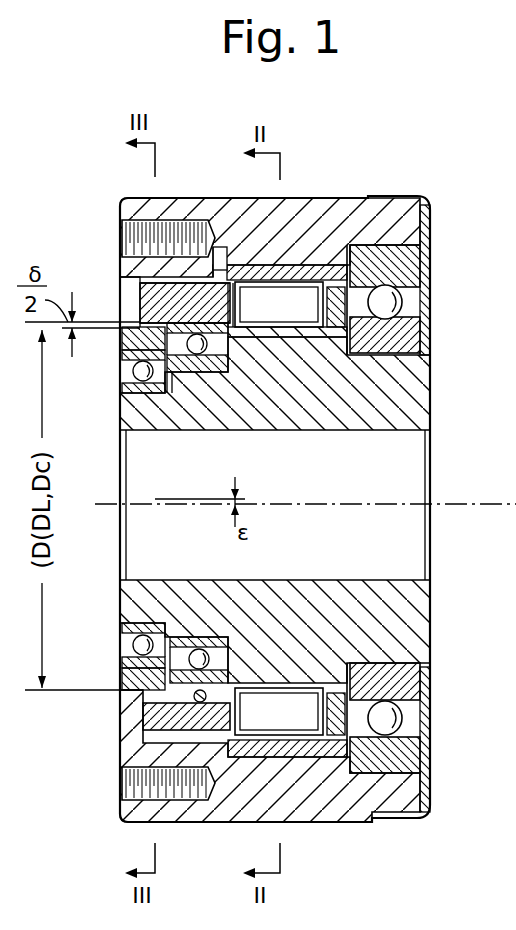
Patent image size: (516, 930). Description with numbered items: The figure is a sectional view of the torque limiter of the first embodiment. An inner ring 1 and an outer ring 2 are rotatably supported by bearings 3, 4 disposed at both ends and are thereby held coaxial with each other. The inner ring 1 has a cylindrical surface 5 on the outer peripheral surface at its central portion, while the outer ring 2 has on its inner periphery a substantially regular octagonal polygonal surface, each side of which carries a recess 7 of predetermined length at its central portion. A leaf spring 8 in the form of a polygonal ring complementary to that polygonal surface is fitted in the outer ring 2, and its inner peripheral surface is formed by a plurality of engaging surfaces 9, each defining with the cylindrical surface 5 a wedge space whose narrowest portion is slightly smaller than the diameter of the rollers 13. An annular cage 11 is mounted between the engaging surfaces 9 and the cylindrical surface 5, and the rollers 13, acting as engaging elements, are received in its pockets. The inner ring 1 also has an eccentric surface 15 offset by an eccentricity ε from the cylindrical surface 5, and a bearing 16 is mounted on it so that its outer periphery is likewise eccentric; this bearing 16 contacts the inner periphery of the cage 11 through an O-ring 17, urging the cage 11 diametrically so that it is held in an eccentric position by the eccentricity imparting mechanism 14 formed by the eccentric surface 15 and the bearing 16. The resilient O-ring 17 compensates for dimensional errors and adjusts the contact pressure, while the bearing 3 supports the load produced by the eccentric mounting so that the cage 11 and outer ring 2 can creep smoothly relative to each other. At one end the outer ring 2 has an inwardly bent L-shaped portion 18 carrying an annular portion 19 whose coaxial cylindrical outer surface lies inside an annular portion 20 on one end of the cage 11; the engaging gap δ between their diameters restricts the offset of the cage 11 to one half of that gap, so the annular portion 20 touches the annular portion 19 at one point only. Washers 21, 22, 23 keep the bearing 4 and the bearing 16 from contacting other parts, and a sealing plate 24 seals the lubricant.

The inner ring 1 is at (408, 381).
The outer ring 2 is at (140, 197).
The bearing 3 is at (122, 665).
The bearing 4 is at (405, 256).
The cylindrical surface 5 is at (300, 418).
The recess 7 is at (368, 198).
The leaf spring 8 is at (307, 290).
The engaging surface 9 is at (282, 285).
The cage 11 is at (178, 290).
The roller 13 is at (338, 418).
The eccentricity imparting mechanism 14 is at (193, 418).
The eccentric surface 15 is at (245, 418).
The bearing 16 is at (157, 418).
The O-ring 17 is at (186, 699).
The L-shaped portion 18 is at (121, 330).
The annular portion 19 is at (147, 318).
The annular portion 20 is at (160, 298).
The washer 21 is at (338, 665).
The washer 22 is at (237, 647).
The washer 23 is at (422, 302).
The sealing plate 24 is at (425, 715).